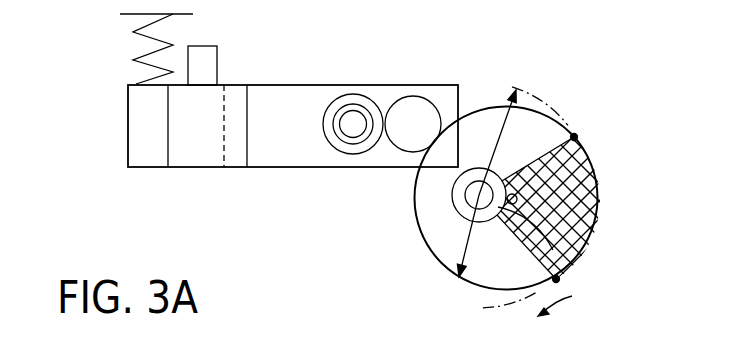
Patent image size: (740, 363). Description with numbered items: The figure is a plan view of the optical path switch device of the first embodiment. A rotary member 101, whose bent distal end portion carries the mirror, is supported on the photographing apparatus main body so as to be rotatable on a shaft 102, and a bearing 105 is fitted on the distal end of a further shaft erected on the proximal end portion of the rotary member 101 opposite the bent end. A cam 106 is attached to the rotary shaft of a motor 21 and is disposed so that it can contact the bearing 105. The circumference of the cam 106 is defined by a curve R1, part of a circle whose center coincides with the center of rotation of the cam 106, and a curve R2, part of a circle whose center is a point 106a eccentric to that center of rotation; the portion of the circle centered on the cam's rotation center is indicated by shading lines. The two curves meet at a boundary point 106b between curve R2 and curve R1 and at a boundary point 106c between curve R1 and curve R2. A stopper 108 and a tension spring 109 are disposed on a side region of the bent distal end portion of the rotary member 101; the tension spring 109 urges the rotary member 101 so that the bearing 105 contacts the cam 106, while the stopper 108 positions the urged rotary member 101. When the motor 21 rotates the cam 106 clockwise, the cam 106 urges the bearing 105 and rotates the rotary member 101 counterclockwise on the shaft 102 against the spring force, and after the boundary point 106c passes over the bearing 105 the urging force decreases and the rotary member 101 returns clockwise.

The rotary member 101 is at (270, 150).
The shaft 102 is at (353, 155).
The bearing 105 is at (412, 97).
The cam 106 is at (532, 120).
The point eccentric to the center of rotation of the cam 106a is at (556, 279).
The boundary point between curves R2 and R1 106b is at (556, 279).
The boundary point between curves R1 and R2 106c is at (574, 137).
The stopper 108 is at (217, 65).
The tension spring 109 is at (148, 50).
The motor 21 is at (477, 168).
The curve R1 is at (594, 189).
The curve R2 is at (425, 240).